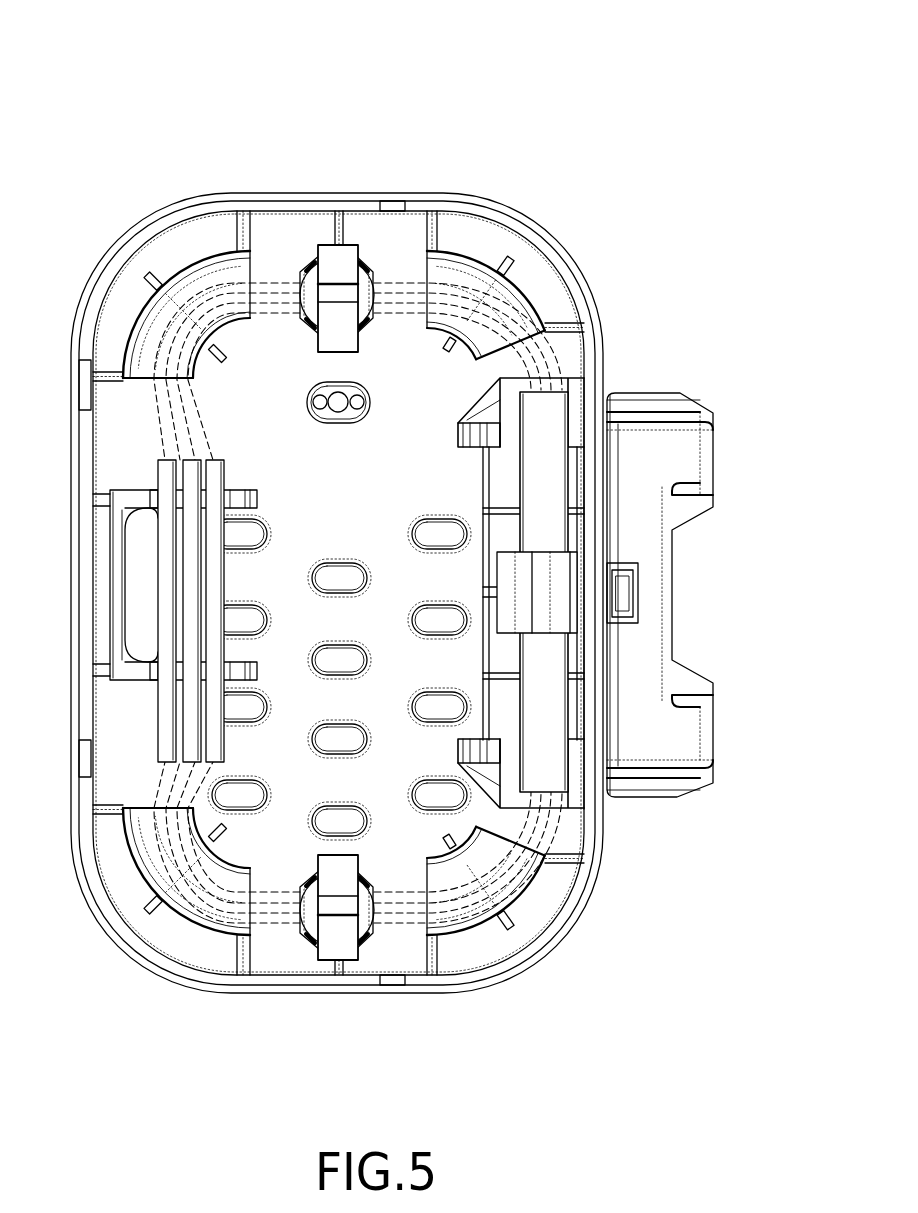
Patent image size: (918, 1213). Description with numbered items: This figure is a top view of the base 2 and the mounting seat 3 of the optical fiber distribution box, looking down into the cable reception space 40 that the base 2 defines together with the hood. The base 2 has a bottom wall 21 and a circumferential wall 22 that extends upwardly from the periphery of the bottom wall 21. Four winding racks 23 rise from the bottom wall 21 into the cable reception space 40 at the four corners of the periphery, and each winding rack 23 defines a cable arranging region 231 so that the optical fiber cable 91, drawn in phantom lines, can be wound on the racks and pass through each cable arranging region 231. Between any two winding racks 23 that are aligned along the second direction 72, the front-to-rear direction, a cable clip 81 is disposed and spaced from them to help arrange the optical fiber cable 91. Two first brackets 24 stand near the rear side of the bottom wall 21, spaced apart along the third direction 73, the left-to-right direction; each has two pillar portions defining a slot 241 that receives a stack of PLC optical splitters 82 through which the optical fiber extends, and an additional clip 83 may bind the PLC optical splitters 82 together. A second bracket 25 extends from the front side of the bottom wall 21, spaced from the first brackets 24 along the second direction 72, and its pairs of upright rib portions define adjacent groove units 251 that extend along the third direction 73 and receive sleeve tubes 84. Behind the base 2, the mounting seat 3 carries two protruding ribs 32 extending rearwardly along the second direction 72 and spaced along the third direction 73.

The base 2 is at (314, 644).
The mounting seat 3 is at (709, 597).
The bottom wall 21 is at (120, 400).
The circumferential wall 22 is at (200, 988).
The winding rack 23 is at (124, 283).
The cable arranging region 231 is at (216, 280).
The first bracket 24 is at (541, 592).
The slot 241 is at (522, 412).
The second bracket 25 is at (133, 569).
The groove unit 251 is at (150, 494).
The protruding rib 32 is at (713, 376).
The cable reception space 40 is at (397, 876).
The second direction 72 is at (87, 105).
The third direction 73 is at (87, 105).
The cable clip 81 is at (348, 258).
The PLC optical splitter 82 is at (557, 415).
The additional clip 83 is at (517, 627).
The sleeve tube 84 is at (168, 460).
The optical fiber cable 91 is at (401, 255).